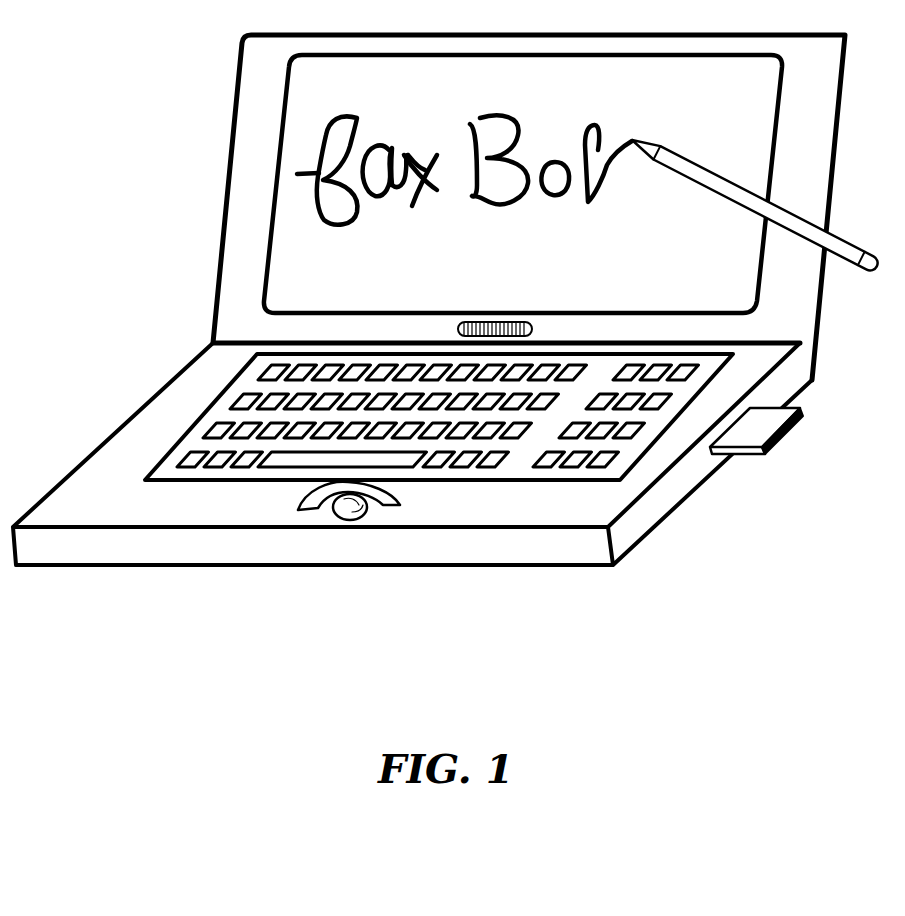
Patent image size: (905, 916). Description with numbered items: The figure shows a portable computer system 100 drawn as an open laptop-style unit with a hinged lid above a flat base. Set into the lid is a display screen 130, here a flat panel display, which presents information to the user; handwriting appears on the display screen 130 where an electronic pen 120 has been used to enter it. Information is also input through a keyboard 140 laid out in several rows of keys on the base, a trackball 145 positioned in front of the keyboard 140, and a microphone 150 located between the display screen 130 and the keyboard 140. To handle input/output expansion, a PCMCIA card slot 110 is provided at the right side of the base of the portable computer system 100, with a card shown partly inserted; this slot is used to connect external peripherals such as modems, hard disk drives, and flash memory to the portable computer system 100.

The portable computer system 100 is at (157, 372).
The PCMCIA card slot 110 is at (788, 438).
The electronic pen 120 is at (703, 204).
The display screen 130 is at (291, 57).
The keyboard 140 is at (527, 487).
The trackball 145 is at (405, 507).
The microphone 150 is at (540, 328).